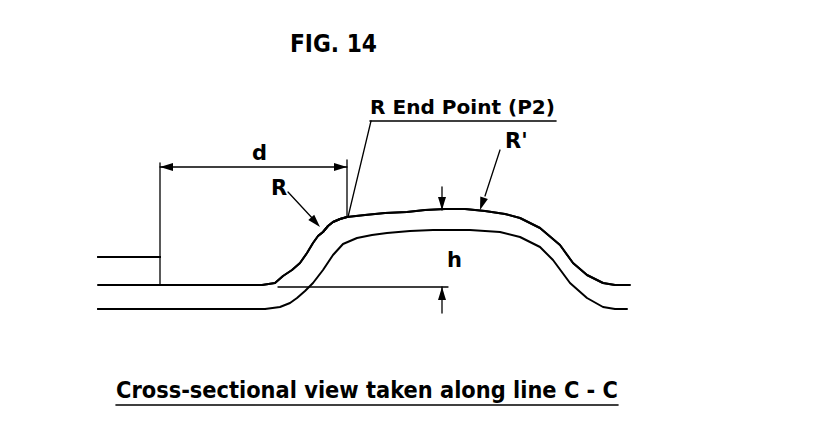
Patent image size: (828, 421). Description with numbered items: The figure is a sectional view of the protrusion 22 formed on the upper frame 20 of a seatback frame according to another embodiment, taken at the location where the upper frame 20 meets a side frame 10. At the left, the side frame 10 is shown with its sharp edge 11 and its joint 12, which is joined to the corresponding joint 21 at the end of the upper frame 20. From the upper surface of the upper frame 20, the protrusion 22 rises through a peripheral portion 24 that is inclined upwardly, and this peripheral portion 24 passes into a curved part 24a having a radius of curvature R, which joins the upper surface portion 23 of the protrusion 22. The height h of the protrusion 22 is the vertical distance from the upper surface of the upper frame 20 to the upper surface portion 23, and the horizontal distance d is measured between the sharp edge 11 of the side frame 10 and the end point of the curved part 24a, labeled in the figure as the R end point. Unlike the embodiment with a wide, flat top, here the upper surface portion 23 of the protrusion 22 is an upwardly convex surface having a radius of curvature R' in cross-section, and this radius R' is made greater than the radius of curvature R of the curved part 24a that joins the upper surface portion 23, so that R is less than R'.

The side frame 10 is at (104, 246).
The sharp edge 11 is at (160, 257).
The joint 12 is at (143, 268).
The upper frame 20 is at (630, 273).
The joint 21 is at (125, 298).
The protrusion 22 is at (548, 210).
The upper surface portion 23 is at (412, 217).
The peripheral portion 24 is at (310, 250).
The curved part 24a is at (329, 227).